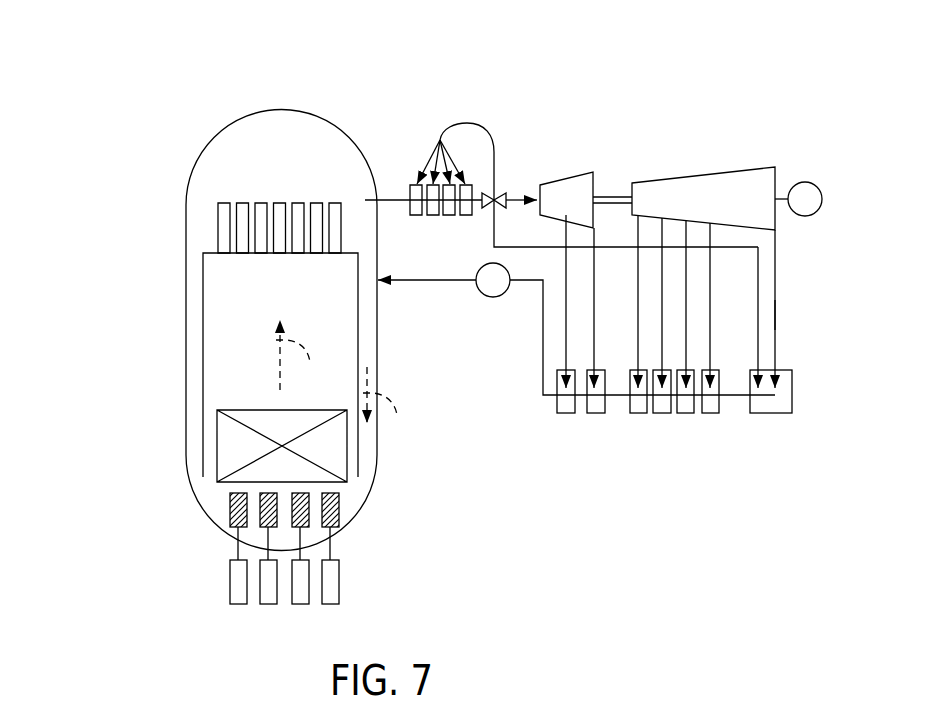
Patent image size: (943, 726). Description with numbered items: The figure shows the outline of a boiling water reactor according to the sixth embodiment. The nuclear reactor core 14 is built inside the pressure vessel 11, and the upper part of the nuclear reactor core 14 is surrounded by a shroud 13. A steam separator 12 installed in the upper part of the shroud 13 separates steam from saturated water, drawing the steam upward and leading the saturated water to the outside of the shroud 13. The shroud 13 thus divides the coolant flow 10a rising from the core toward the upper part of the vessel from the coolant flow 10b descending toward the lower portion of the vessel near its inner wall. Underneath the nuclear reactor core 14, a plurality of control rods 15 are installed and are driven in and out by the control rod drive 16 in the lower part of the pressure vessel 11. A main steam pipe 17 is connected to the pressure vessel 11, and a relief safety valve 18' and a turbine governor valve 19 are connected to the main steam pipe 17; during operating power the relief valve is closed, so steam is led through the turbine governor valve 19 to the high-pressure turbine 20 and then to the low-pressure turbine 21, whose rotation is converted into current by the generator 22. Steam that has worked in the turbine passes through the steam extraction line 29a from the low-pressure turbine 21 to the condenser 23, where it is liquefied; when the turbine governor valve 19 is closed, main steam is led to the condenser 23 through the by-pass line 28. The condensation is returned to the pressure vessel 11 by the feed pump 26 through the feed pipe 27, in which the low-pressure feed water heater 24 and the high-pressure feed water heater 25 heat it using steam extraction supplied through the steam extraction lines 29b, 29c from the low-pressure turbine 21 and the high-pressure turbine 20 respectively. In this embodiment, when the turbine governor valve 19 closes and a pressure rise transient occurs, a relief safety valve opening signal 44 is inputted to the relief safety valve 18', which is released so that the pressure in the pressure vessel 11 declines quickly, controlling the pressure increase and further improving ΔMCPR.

The pressure vessel 11 is at (282, 110).
The steam separator 12 is at (223, 203).
The shroud 13 is at (358, 462).
The nuclear reactor core 14 is at (217, 460).
The control rods 15 is at (339, 512).
The control rod drive 16 is at (339, 588).
The main steam pipe 17 is at (403, 196).
The relief safety valve 18' is at (431, 159).
The turbine governor valve 19 is at (498, 194).
The high-pressure turbine 20 is at (565, 175).
The low-pressure turbine 21 is at (688, 177).
The generator 22 is at (805, 182).
The condenser 23 is at (772, 413).
The low-pressure feed water heater 24 is at (638, 413).
The high-pressure feed water heater 25 is at (566, 413).
The feed pump 26 is at (493, 298).
The feed pipe 27 is at (449, 279).
The by-pass line 28 is at (760, 267).
The steam extraction line 29a is at (776, 333).
The steam extraction lines 29b is at (662, 280).
The steam extraction lines 29c is at (566, 300).
The relief safety valve opening signal 44 is at (468, 123).
The coolant flow to the upper part of the pressure vessel 10a is at (301, 355).
The coolant flow to the lower portion of the pressure vessel 10b is at (394, 404).